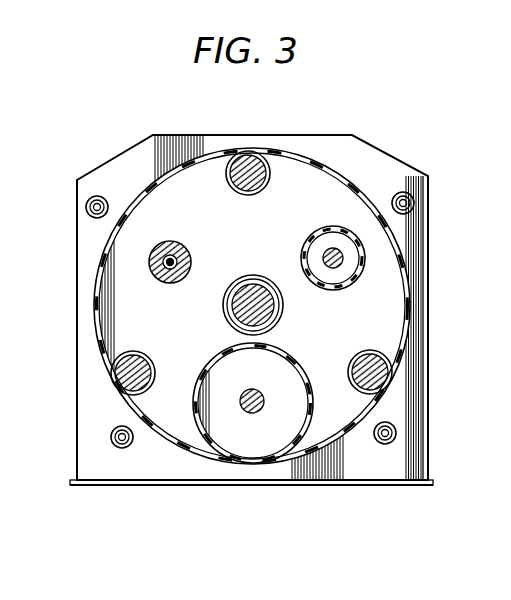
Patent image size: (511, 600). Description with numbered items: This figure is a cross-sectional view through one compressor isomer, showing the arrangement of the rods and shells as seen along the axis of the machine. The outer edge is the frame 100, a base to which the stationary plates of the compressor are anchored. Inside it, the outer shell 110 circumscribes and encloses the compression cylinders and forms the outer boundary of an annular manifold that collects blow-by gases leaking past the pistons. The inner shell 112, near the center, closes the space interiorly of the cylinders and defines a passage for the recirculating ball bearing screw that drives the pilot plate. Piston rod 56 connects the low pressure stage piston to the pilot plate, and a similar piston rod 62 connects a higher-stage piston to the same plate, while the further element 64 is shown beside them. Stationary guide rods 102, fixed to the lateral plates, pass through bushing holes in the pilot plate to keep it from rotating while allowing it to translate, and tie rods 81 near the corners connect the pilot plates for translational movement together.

The frame 100 is at (385, 485).
The outer shell 110 is at (335, 168).
The guide rods 102 is at (252, 153).
The shaft opening 64 is at (173, 258).
The piston rod 62 is at (343, 260).
The inner shell 112 is at (250, 276).
The piston rod 56 is at (260, 392).
The tie rods 81 is at (101, 196).